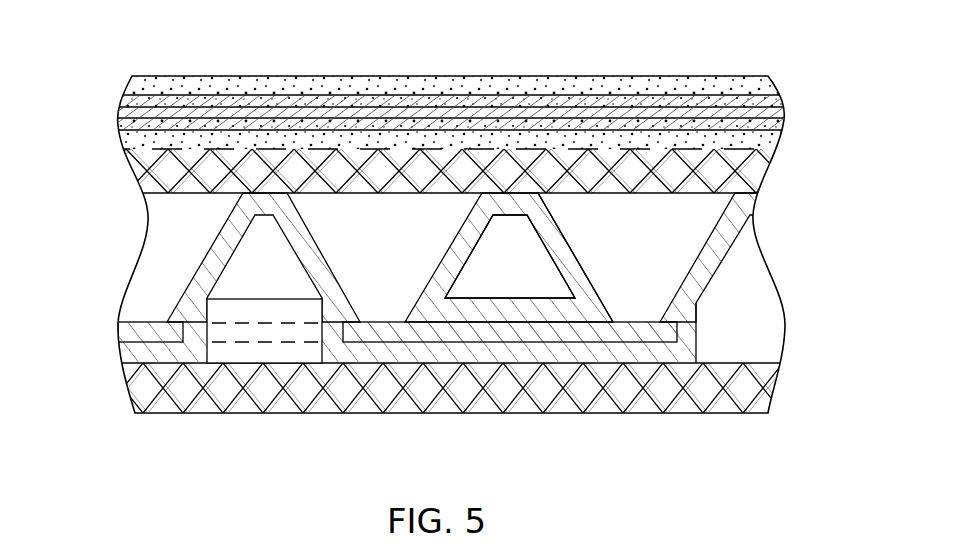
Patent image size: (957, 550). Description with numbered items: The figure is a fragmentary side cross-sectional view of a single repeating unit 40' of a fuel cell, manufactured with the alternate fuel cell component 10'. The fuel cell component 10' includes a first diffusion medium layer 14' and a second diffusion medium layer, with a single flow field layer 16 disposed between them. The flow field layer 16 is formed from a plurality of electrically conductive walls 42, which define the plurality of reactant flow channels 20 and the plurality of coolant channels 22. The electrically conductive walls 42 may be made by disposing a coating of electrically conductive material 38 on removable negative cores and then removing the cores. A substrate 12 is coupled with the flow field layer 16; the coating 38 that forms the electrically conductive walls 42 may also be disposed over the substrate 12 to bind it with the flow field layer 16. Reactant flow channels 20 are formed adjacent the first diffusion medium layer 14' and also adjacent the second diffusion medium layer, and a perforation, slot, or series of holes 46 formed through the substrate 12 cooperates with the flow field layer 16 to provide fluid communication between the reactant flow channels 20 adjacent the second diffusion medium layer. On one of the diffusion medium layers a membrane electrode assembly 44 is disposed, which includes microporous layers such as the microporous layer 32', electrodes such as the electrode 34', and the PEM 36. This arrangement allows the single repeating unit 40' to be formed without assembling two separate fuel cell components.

The alternate fuel cell component 10' is at (417, 244).
The single repeating unit 40' is at (450, 80).
The membrane electrode assembly 44 is at (108, 75).
The PEM 36 is at (782, 112).
The electrode 34' is at (479, 129).
The microporous layer 32' is at (477, 148).
The first diffusion medium layer 14' is at (465, 171).
The flow field layer 16 is at (801, 193).
The substrate 12 is at (680, 335).
The reactant flow channels 20 is at (361, 263).
The coating of electrically conductive material 38 is at (202, 240).
The electrically conductive walls 42 is at (565, 243).
The coolant channels 22 is at (519, 267).
The series of holes 46 is at (246, 313).